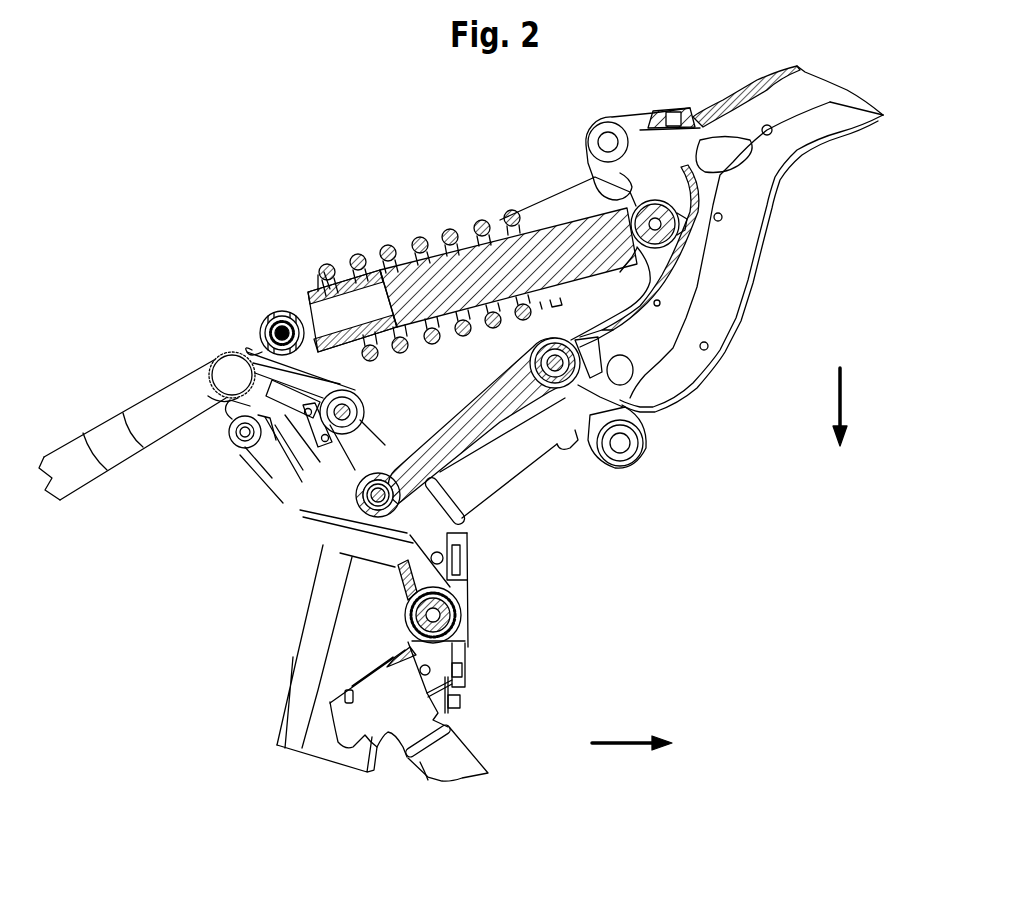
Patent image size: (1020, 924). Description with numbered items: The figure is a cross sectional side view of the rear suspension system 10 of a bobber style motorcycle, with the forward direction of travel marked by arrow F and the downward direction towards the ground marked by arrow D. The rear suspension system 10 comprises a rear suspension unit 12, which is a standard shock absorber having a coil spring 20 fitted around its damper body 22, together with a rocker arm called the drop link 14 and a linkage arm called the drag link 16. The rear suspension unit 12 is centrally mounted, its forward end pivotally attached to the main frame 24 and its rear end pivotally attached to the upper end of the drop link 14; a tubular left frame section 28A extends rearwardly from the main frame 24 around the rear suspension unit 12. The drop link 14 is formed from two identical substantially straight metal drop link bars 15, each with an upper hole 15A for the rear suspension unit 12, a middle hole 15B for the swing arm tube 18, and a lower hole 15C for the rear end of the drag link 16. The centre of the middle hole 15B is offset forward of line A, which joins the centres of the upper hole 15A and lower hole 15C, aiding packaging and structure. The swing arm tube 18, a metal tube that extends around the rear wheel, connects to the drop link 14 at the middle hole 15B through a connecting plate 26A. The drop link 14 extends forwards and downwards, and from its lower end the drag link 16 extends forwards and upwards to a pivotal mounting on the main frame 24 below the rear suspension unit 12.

The rear suspension system 10 is at (296, 212).
The rear suspension unit 12 is at (567, 213).
The drop link 14 is at (268, 366).
The drop link bars 15 is at (362, 463).
The upper hole 15A is at (262, 327).
The middle hole 15B is at (362, 405).
The lower hole 15C is at (386, 467).
The drag link 16 is at (490, 422).
The swing arm tube 18 is at (156, 398).
The coil spring 20 is at (393, 250).
The damper body 22 is at (473, 267).
The main frame 24 is at (747, 220).
The connecting plate 26A is at (273, 447).
The left frame section 28A is at (580, 193).
The line A is at (268, 307).
The arrow D is at (838, 400).
The arrow F is at (618, 741).